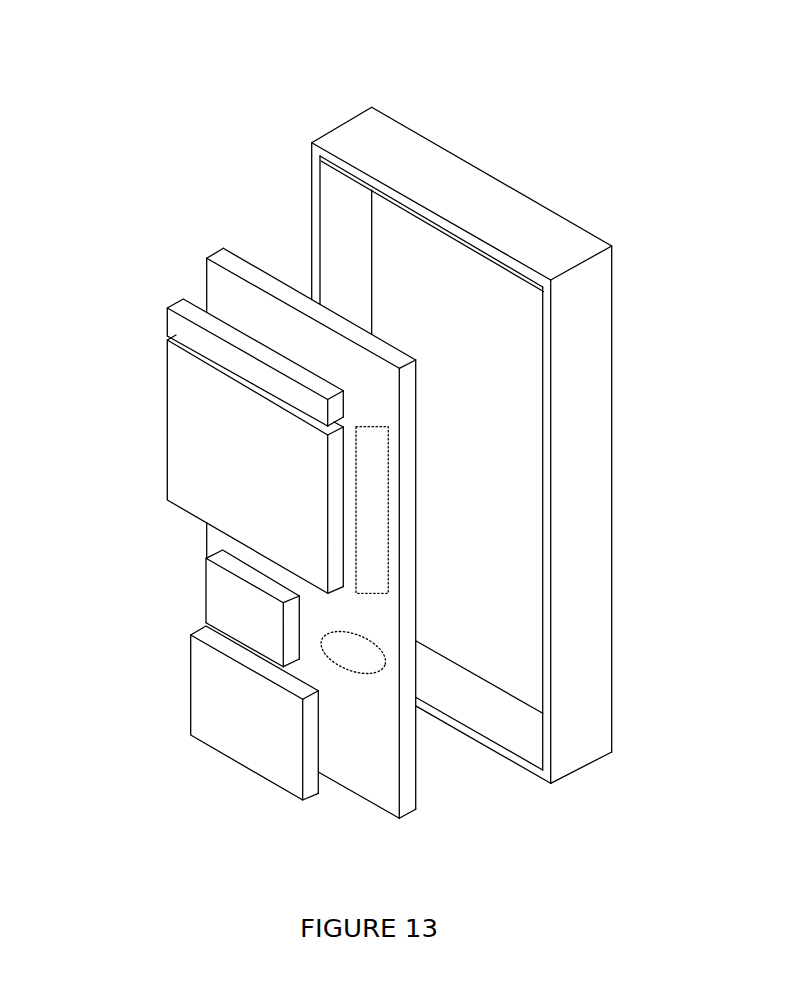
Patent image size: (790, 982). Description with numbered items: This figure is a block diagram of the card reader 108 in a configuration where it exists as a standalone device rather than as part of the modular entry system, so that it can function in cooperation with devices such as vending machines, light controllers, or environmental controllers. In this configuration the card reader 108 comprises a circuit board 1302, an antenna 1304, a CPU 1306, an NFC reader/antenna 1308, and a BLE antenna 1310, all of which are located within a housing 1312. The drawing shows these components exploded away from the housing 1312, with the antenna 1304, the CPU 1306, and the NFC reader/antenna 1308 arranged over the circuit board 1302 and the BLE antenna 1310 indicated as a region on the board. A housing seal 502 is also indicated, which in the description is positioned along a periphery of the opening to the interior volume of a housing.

The card reader 108 is at (497, 402).
The circuit board 1302 is at (222, 258).
The antenna 1304 is at (181, 432).
The CPU 1306 is at (220, 580).
The NFC reader/antenna 1308 is at (203, 720).
The BLE antenna 1310 is at (377, 488).
The housing 1312 is at (603, 347).
The housing seal 502 is at (360, 665).